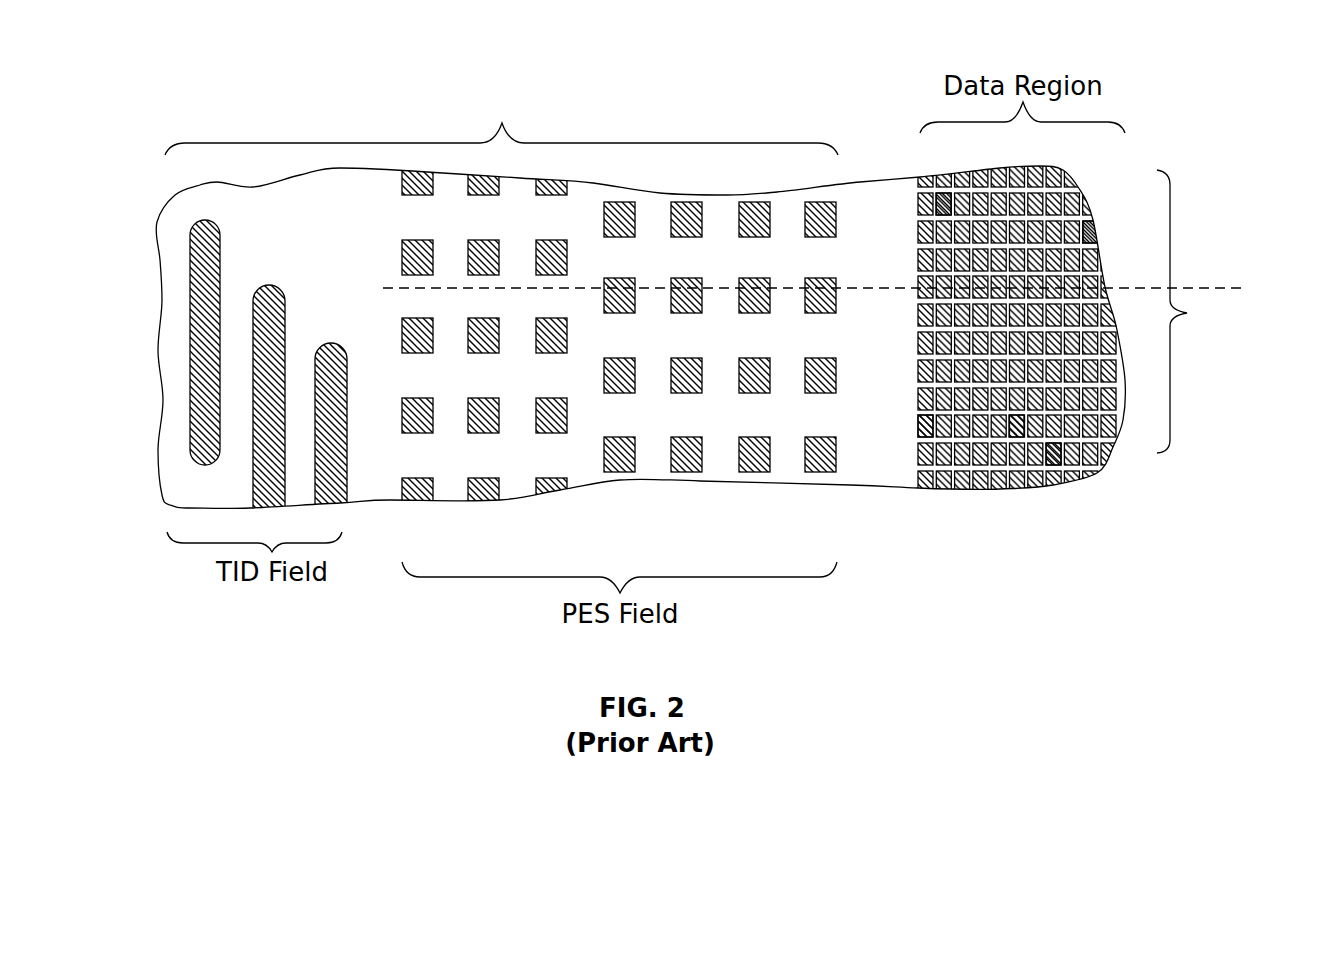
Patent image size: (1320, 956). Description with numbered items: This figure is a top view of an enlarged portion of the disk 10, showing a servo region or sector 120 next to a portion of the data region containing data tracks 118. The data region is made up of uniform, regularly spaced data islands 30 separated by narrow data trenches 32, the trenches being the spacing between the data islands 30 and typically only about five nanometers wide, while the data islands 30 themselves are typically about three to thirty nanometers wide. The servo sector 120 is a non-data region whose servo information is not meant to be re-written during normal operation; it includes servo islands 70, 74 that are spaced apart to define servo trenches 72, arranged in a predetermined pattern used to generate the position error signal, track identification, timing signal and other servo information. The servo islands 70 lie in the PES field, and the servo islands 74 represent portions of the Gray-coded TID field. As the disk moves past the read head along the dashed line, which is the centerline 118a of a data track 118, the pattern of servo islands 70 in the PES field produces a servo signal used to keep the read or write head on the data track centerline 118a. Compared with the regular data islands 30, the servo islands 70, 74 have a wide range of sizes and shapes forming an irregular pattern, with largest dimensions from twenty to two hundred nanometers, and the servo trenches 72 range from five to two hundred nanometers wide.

The disk 10 is at (157, 380).
The data islands 30 is at (1025, 345).
The data trenches 32 is at (947, 193).
The servo islands 70 is at (687, 200).
The servo trenches 72 is at (312, 212).
The servo islands 74 is at (195, 250).
The data track 118 is at (1196, 311).
The data track centerline 118a is at (1230, 287).
The servo region or sector 120 is at (501, 109).